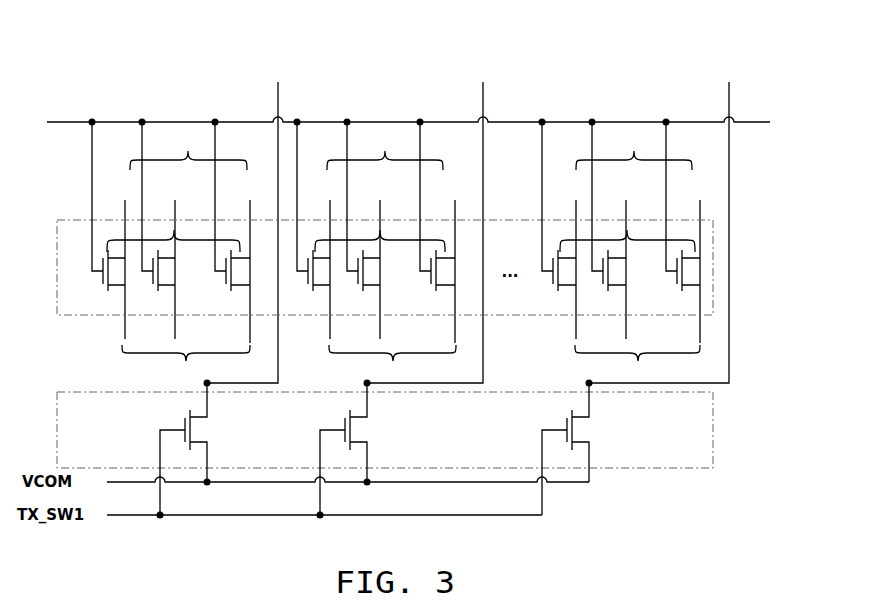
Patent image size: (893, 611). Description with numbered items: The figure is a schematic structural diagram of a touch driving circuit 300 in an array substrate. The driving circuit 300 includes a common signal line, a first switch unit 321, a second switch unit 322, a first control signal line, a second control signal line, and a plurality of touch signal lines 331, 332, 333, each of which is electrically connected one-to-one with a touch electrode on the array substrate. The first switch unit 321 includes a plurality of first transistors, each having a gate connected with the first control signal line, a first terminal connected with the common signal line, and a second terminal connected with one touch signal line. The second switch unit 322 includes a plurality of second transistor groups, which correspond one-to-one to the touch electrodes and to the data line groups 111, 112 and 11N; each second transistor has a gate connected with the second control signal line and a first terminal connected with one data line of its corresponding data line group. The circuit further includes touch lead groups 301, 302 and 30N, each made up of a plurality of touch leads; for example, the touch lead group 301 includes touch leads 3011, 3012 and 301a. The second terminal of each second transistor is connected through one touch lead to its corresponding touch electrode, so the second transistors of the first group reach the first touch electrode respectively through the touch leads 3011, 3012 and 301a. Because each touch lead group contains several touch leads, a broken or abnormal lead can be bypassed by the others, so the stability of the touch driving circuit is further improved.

The touch driving circuit 300 is at (724, 32).
The touch signal line 331 is at (280, 99).
The touch signal line 332 is at (485, 99).
The touch signal line 333 is at (731, 99).
The data line group 111 is at (187, 165).
The data line group 112 is at (392, 237).
The data line group 11N is at (639, 237).
The touch lead 3011 is at (125, 336).
The touch lead 3012 is at (176, 322).
The touch lead 301a is at (250, 341).
The touch lead group 301 is at (162, 252).
The touch lead group 302 is at (366, 252).
The touch lead group 30N is at (613, 252).
The second switch unit 322 is at (713, 272).
The first switch unit 321 is at (713, 430).